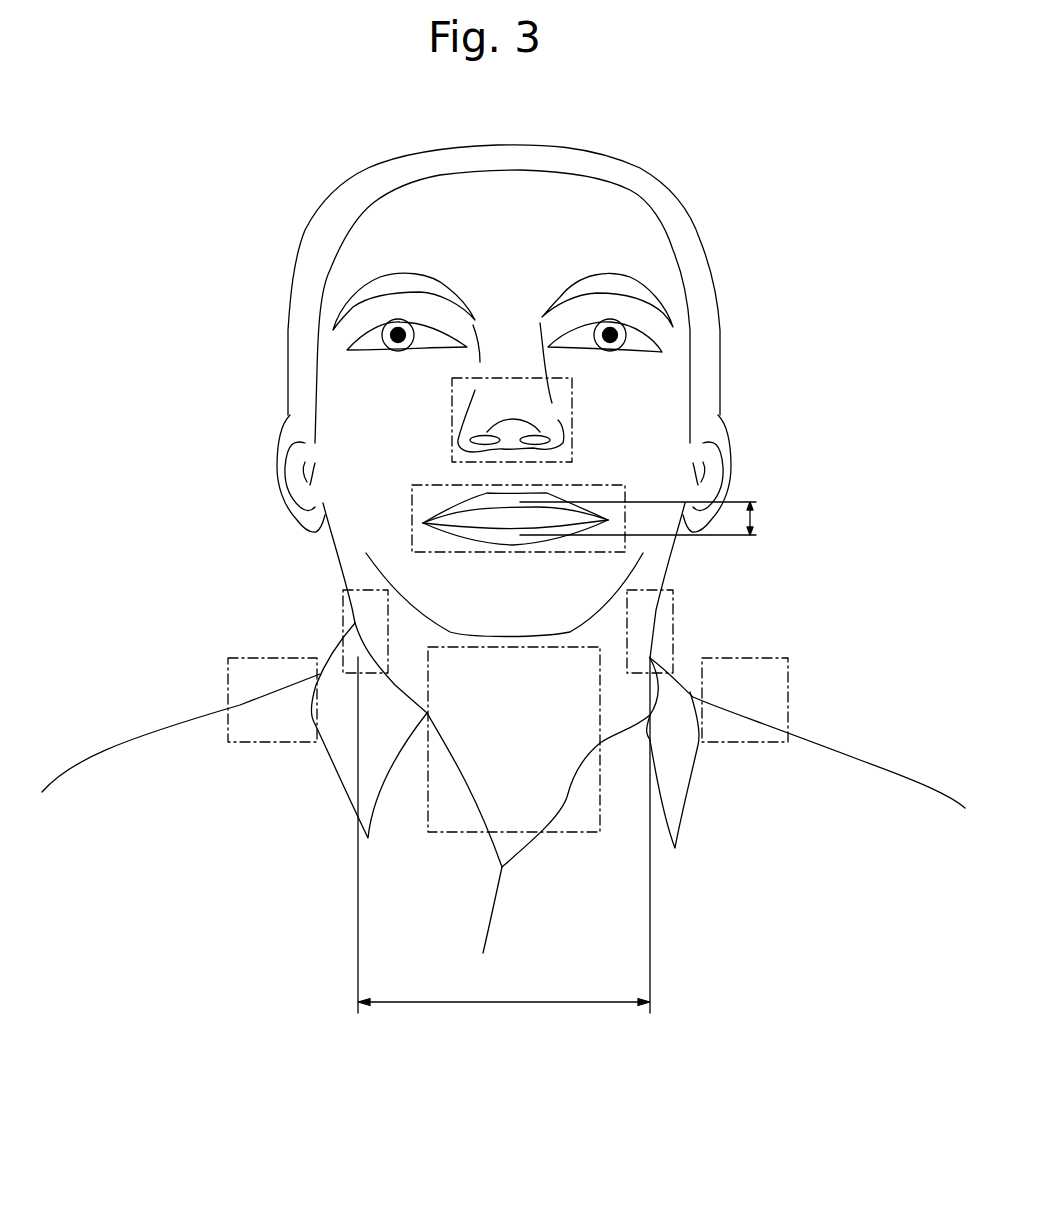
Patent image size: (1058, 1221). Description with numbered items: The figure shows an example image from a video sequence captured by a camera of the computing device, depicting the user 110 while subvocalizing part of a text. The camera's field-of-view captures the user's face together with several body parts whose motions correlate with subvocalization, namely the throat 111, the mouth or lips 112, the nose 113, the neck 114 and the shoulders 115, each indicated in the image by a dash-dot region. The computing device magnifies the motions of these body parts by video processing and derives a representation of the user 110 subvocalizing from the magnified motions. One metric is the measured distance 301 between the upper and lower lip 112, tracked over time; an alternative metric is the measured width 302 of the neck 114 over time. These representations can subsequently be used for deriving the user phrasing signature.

The user 110 is at (742, 197).
The throat 111 is at (510, 725).
The lips 112 is at (455, 510).
The nose 113 is at (545, 412).
The neck 114 is at (355, 618).
The shoulders 115 is at (263, 695).
The measured distance 301 is at (752, 518).
The measured width 302 is at (497, 1003).